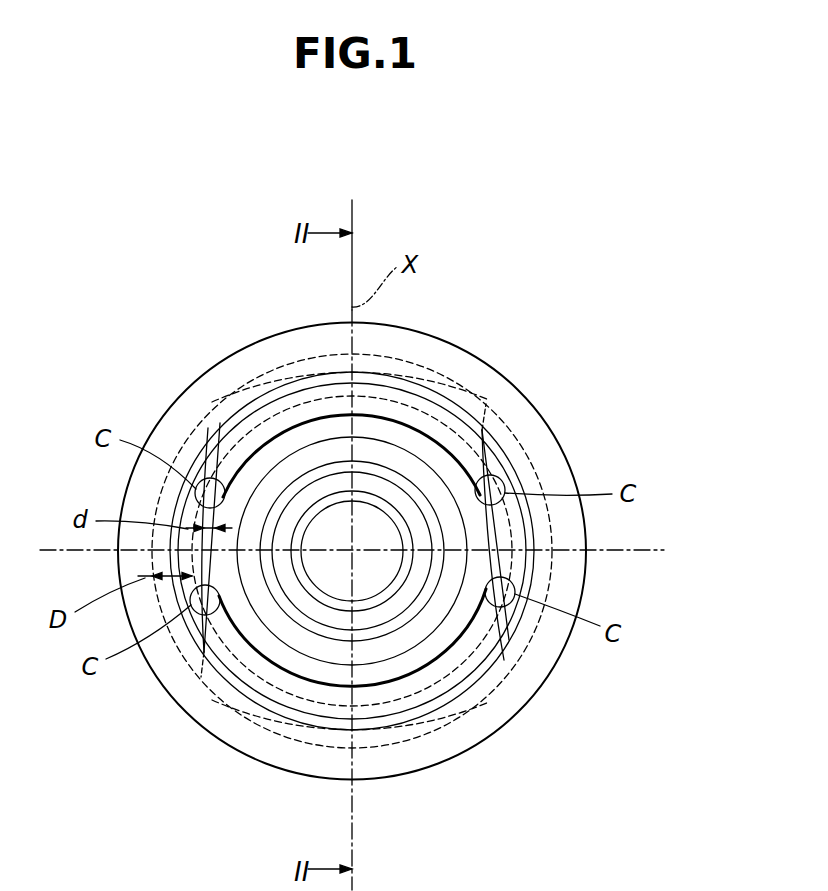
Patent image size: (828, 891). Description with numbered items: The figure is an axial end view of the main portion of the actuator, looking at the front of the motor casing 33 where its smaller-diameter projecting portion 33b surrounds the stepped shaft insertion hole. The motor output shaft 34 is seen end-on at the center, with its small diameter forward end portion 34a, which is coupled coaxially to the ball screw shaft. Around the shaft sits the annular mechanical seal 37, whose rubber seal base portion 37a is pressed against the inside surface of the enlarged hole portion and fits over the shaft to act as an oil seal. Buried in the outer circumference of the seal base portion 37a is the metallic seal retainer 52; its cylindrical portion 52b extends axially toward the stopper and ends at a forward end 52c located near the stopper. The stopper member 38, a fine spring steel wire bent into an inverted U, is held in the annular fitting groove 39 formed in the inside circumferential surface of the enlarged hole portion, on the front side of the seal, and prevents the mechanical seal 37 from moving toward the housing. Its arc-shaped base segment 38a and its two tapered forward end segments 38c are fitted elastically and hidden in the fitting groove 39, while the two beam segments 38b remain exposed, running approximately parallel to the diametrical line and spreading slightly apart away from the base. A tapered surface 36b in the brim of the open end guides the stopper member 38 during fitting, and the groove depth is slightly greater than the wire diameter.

The motor casing 33 is at (233, 343).
The projecting portion 33b is at (533, 435).
The motor output shaft 34 is at (310, 600).
The small diameter forward end portion 34a is at (376, 582).
The tapered surface 36b is at (313, 723).
The mechanical seal 37 is at (527, 564).
The seal base portion 37a is at (517, 537).
The stopper member 38 is at (487, 402).
The base segment 38a is at (412, 366).
The beam segment 38b is at (215, 450).
The forward end segment 38c is at (265, 716).
The fitting groove 39 is at (418, 735).
The seal retainer 52 is at (433, 415).
The cylindrical portion 52b is at (485, 708).
The forward end 52c is at (485, 708).